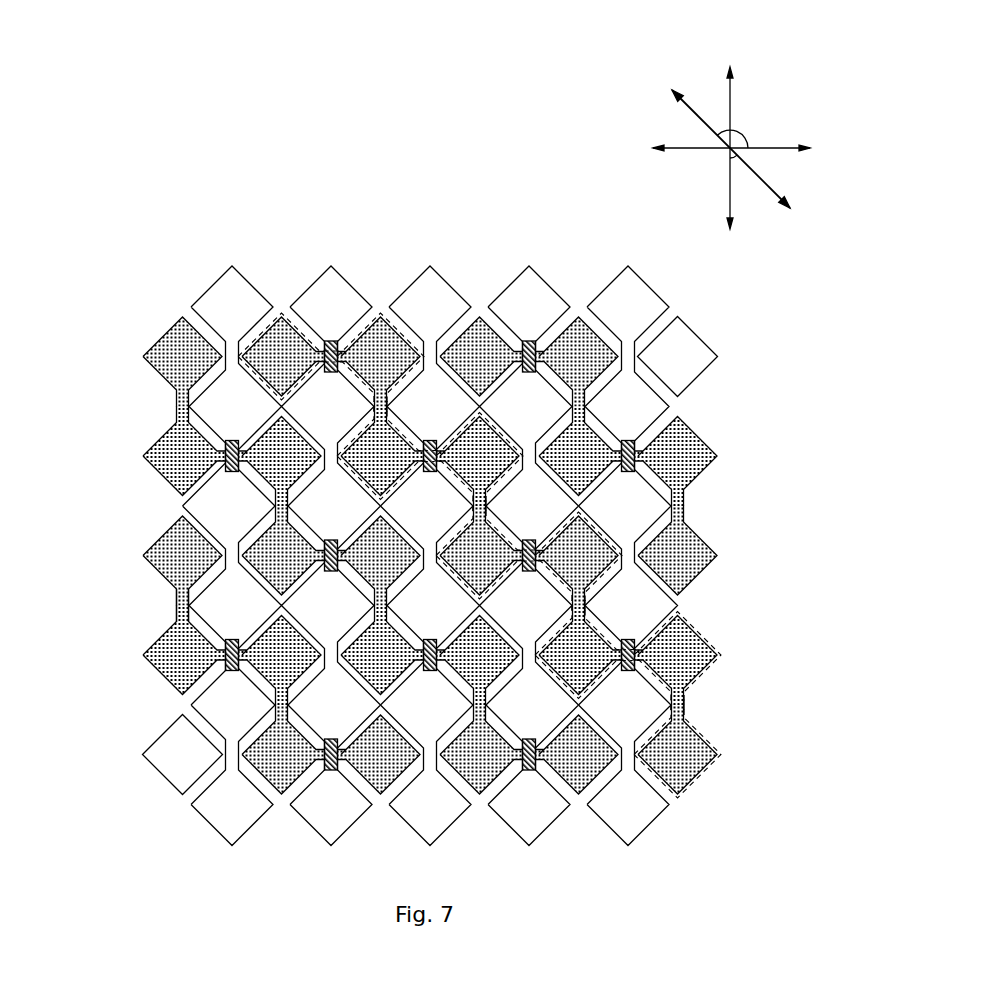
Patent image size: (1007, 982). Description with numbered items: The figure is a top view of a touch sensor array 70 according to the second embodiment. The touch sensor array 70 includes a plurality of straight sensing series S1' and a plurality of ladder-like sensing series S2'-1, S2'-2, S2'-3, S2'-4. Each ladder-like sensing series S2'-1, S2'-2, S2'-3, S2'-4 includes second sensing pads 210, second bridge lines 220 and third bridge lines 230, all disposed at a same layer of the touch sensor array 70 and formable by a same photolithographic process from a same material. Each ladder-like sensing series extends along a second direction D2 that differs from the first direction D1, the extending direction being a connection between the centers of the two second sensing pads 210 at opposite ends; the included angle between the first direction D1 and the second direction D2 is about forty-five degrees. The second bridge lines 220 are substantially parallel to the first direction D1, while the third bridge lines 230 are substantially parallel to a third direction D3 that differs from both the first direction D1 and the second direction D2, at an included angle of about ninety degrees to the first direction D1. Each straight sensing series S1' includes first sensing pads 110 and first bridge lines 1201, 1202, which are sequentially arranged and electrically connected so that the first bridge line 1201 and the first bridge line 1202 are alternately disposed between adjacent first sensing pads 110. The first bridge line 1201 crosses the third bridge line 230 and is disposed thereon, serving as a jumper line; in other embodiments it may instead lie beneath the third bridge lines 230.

The touch sensor array 70 is at (96, 51).
The first sensing pad 110 is at (408, 300).
The straight sensing series S1' is at (480, 487).
The ladder-like sensing series S2'-1 is at (228, 654).
The ladder-like sensing series S2'-2 is at (314, 555).
The ladder-like sensing series S2'-3 is at (479, 445).
The ladder-like sensing series S2'-4 is at (578, 343).
The second sensing pad 210 is at (157, 570).
The second bridge line 220 is at (176, 602).
The third bridge line 230 is at (224, 670).
The first bridge line 1201 is at (542, 322).
The first bridge line 1202 is at (384, 316).
The first direction D1 is at (730, 163).
The second direction D2 is at (745, 163).
The third direction D3 is at (748, 148).